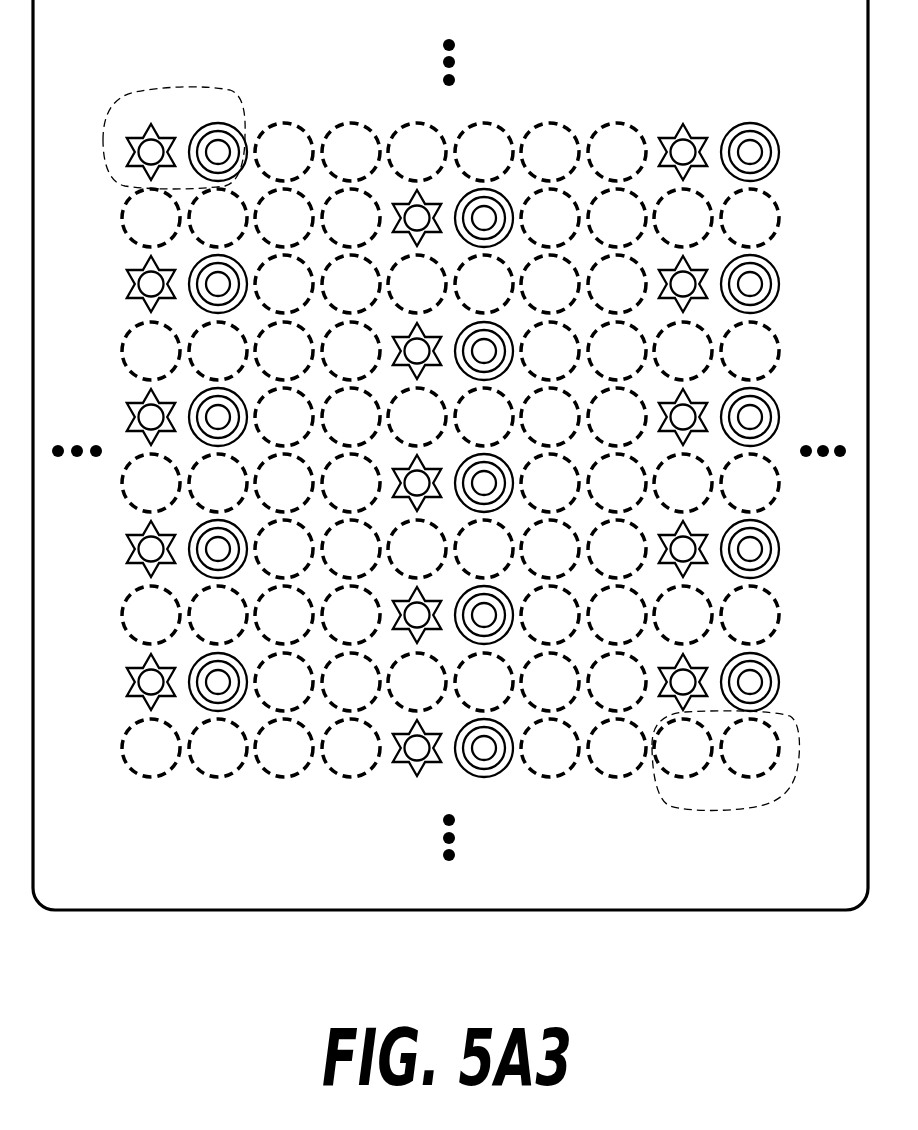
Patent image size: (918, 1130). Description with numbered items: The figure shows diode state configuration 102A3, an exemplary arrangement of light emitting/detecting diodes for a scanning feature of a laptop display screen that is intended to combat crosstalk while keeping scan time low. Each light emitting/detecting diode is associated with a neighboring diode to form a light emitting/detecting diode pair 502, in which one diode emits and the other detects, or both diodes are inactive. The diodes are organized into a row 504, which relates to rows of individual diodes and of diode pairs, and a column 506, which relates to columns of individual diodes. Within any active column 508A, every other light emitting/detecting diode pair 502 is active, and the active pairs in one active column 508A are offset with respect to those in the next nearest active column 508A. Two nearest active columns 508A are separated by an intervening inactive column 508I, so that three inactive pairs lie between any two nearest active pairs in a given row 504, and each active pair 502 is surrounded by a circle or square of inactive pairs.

The diode state configuration 102A3 is at (771, 878).
The light emitting/detecting diode pair 502 is at (166, 119).
The row 504 is at (790, 117).
The column 506 is at (782, 112).
The active column 508A is at (252, 780).
The inactive column 508I is at (387, 780).